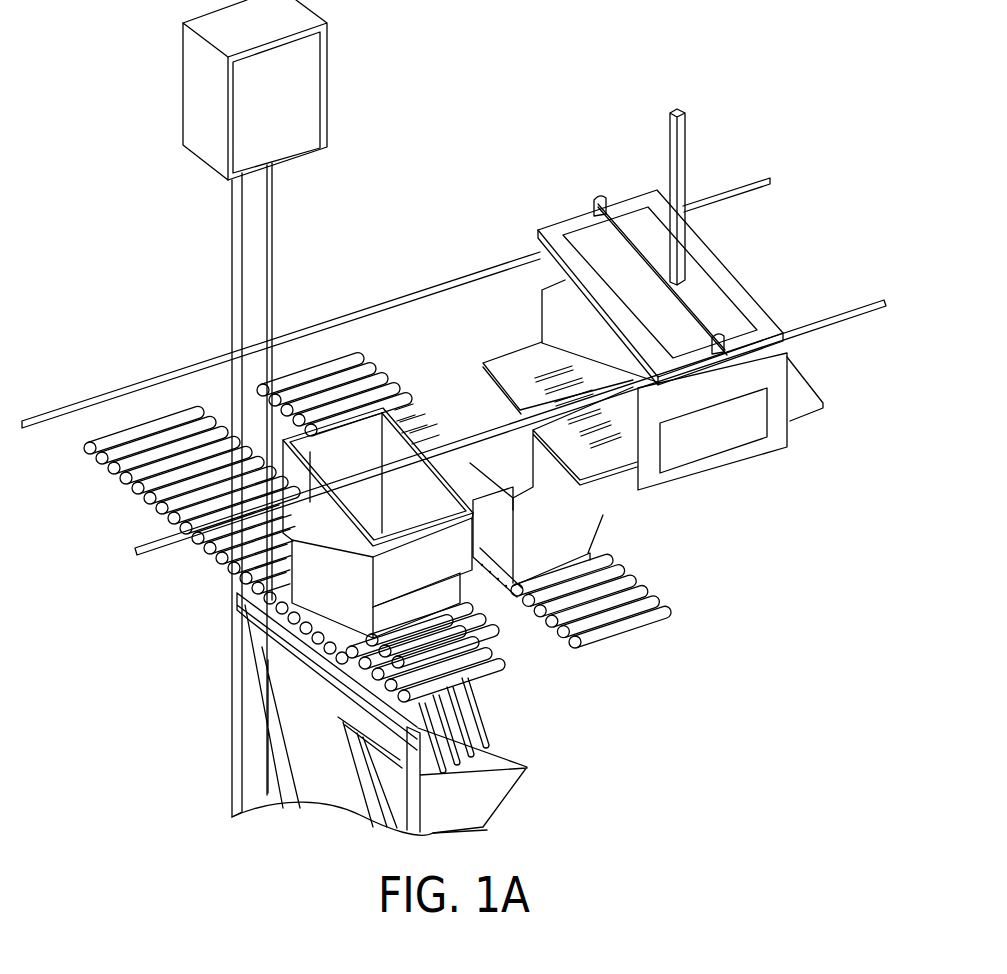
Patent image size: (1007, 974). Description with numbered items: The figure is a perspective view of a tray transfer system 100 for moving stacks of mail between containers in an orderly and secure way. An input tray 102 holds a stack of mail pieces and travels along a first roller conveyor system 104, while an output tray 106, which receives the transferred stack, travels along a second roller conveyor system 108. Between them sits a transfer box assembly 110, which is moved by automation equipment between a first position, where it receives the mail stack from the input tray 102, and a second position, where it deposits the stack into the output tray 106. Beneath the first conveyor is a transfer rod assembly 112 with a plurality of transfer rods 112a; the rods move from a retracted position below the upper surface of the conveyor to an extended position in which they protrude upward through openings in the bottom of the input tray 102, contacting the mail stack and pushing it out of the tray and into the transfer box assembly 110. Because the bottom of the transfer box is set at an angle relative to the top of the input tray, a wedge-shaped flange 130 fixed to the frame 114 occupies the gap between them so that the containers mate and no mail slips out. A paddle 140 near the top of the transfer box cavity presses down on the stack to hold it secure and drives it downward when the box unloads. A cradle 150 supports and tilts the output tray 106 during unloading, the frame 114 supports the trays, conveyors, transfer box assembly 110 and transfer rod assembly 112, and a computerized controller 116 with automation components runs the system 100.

The tray transfer system 100 is at (418, 256).
The input tray 102 is at (283, 533).
The first roller conveyor system 104 is at (533, 670).
The output tray 106 is at (613, 477).
The second roller conveyor system 108 is at (683, 618).
The transfer box assembly 110 is at (735, 290).
The transfer rod assembly 112 is at (503, 760).
The transfer rods 112a is at (483, 703).
The frame 114 is at (244, 668).
The computerized controller 116 is at (183, 88).
The wedge-shaped flange 130 is at (290, 545).
The paddle 140 is at (687, 157).
The cradle 150 is at (497, 560).